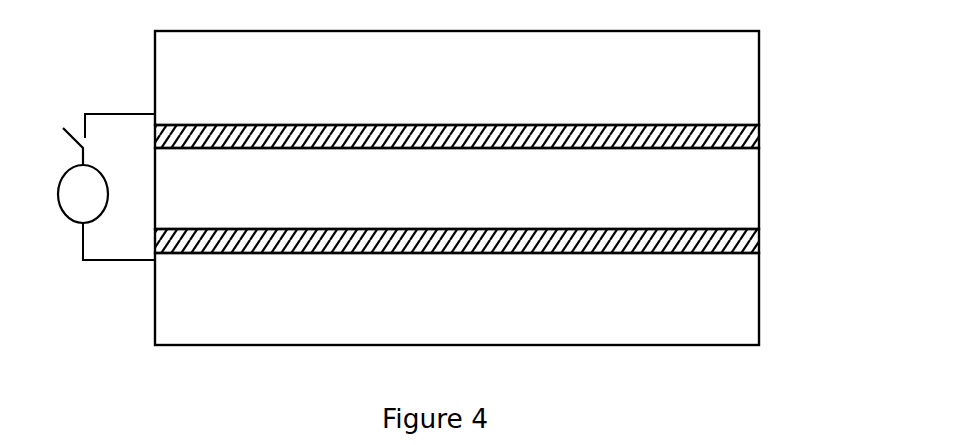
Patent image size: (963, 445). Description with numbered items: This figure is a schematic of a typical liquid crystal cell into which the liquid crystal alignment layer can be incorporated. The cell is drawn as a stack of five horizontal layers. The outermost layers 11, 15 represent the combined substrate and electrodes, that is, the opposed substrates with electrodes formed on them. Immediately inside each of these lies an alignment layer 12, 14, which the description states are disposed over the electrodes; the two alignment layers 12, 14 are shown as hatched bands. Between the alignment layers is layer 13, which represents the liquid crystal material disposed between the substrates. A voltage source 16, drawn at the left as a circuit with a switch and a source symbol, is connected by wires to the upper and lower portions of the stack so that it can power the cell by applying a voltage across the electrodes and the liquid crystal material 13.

The combined substrate and electrode layer 11 is at (739, 302).
The alignment layer 12 is at (759, 241).
The liquid crystal material 13 is at (739, 186).
The alignment layer 14 is at (759, 137).
The combined substrate and electrode layer 15 is at (739, 76).
The voltage source 16 is at (98, 226).